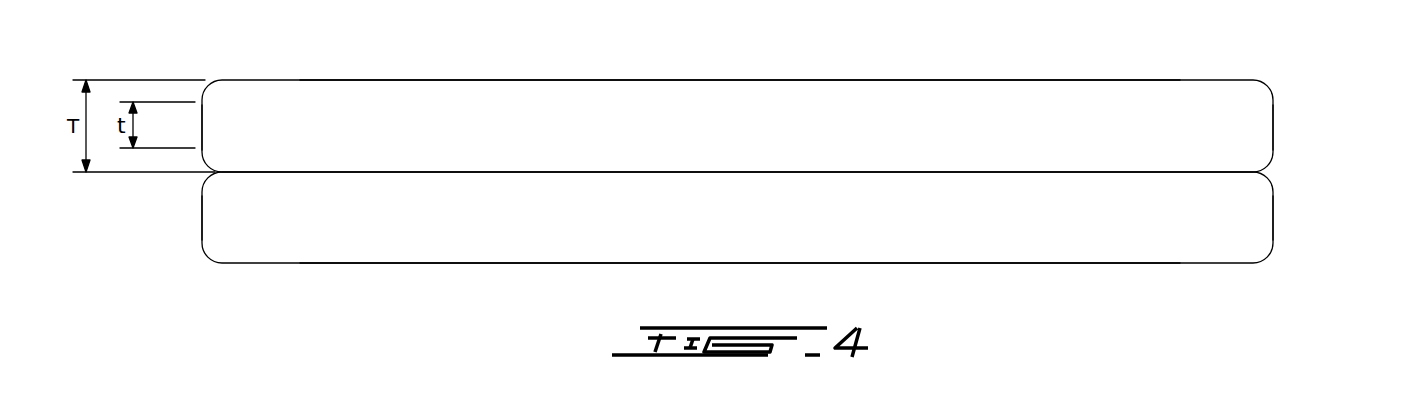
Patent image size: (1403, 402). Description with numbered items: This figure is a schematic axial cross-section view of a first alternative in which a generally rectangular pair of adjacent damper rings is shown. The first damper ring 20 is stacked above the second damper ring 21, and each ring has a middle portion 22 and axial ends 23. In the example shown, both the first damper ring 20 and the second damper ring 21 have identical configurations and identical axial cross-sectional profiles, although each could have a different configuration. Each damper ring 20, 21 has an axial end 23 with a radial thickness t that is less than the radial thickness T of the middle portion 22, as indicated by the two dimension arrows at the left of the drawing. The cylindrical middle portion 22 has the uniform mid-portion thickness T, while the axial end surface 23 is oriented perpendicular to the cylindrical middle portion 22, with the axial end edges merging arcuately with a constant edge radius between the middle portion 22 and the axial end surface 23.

The first damper ring 20 is at (746, 137).
The second damper ring 21 is at (746, 231).
The middle portion 22 is at (500, 80).
The axial end 23 is at (203, 126).